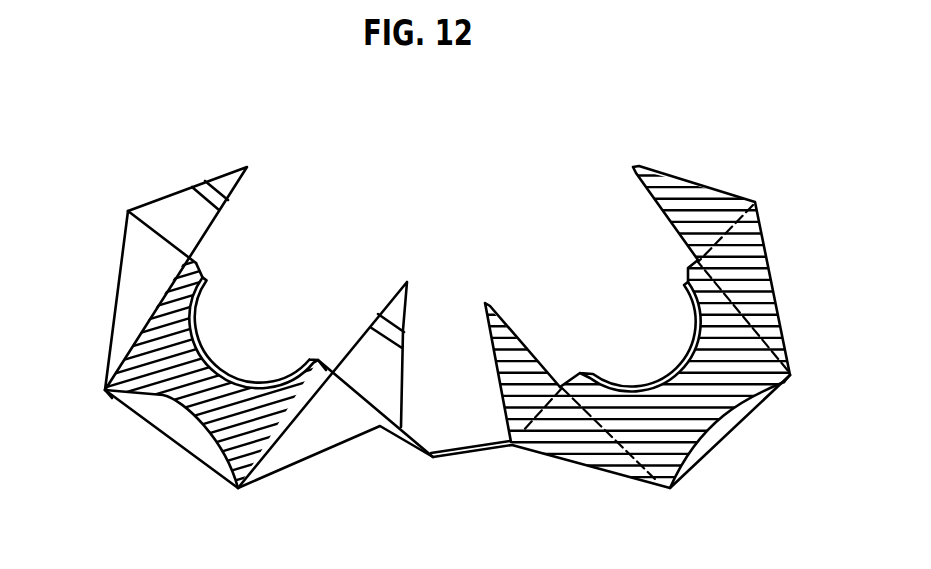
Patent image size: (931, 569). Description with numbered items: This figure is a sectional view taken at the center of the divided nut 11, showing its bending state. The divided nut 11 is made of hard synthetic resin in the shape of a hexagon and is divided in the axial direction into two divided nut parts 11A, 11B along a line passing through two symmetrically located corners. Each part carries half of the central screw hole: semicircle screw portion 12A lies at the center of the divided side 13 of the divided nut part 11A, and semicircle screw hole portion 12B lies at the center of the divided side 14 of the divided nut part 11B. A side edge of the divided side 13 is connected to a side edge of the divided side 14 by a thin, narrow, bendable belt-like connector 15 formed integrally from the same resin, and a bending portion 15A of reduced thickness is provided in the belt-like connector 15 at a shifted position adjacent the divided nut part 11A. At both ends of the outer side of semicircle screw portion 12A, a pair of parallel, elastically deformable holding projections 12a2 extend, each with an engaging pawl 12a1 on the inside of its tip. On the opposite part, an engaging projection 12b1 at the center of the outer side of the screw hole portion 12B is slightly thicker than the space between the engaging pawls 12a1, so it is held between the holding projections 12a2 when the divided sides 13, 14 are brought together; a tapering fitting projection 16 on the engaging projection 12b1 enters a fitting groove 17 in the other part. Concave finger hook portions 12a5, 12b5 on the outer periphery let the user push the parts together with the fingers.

The divided nut 11 is at (363, 502).
The divided nut part 11A is at (105, 392).
The divided nut part 11B is at (791, 375).
The semicircle screw portion 12A is at (203, 357).
The semicircle screw hole portion 12B is at (685, 370).
The engaging pawl 12a1 is at (223, 174).
The holding projection 12a2 is at (176, 191).
The finger hook portion 12a5 is at (169, 445).
The engaging projection 12b1 is at (757, 270).
The finger hook portion 12b5 is at (735, 424).
The divided side 13 is at (190, 260).
The divided side 14 is at (698, 258).
The belt-like connector 15 is at (475, 457).
The bending portion 15A is at (432, 460).
The fitting projection 16 is at (500, 350).
The fitting groove 17 is at (117, 293).